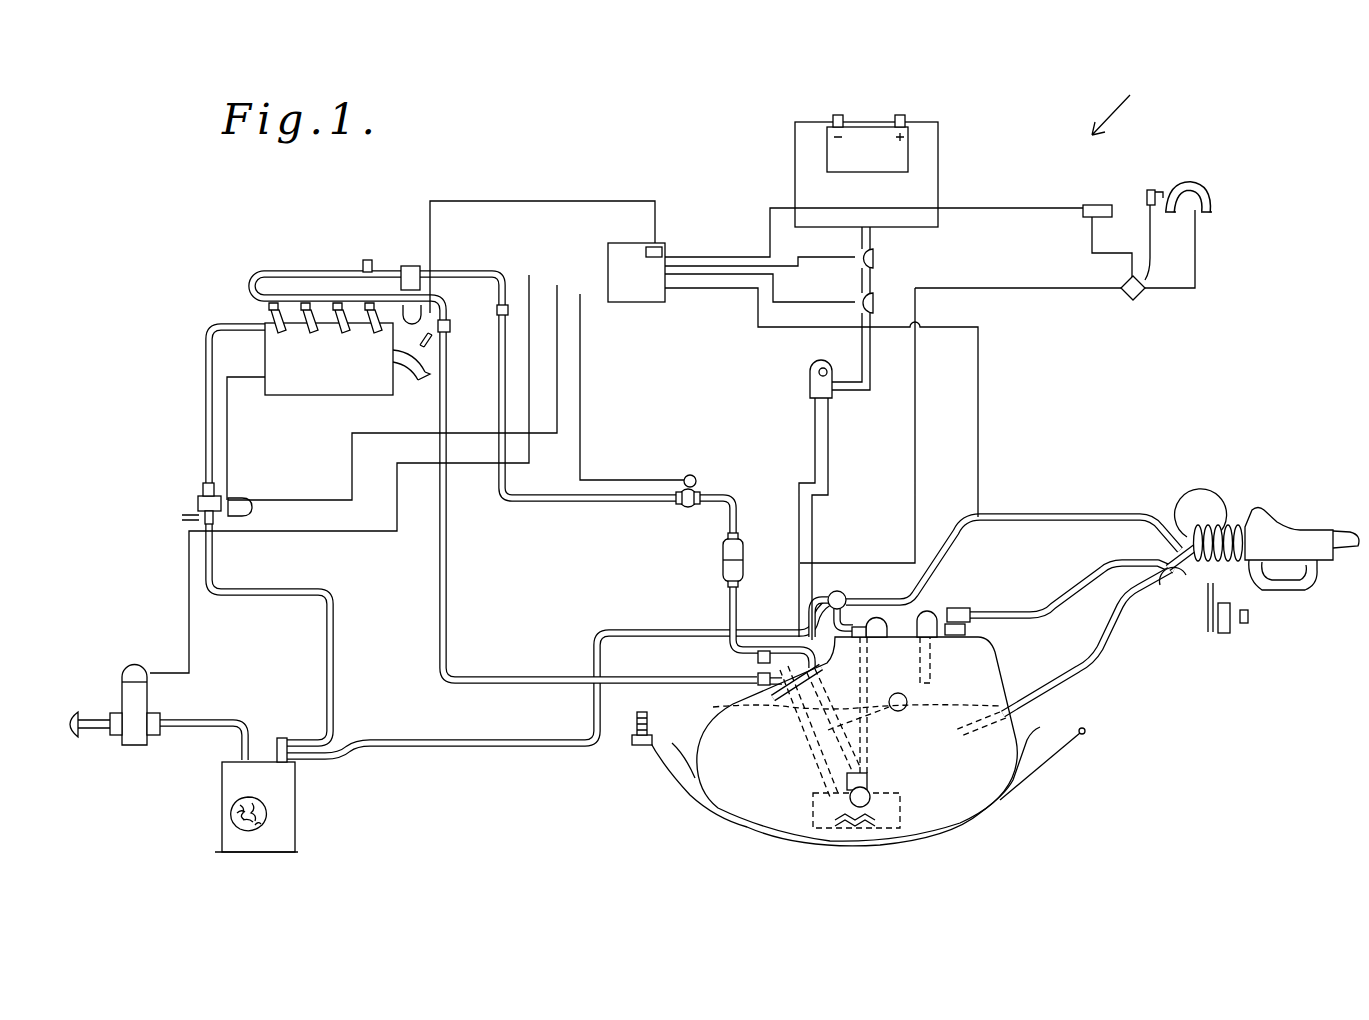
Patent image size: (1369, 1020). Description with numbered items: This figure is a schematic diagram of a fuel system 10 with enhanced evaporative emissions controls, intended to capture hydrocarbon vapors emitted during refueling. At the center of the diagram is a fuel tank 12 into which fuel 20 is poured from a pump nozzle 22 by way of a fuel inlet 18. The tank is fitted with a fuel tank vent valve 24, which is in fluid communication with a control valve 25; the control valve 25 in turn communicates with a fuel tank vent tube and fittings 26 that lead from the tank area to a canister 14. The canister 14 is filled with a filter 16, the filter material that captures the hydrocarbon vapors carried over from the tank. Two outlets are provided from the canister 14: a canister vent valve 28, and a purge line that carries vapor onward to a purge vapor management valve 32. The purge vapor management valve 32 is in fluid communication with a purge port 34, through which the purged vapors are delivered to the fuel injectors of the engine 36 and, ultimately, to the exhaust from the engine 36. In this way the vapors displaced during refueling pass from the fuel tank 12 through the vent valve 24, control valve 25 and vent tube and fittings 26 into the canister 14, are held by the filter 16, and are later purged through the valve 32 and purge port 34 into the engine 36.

The fuel system 10 is at (1117, 99).
The fuel tank 12 is at (772, 803).
The canister 14 is at (248, 795).
The filter 16 is at (268, 815).
The fuel inlet 18 is at (1130, 627).
The fuel 20 is at (957, 782).
The pump nozzle 22 is at (1292, 535).
The fuel tank vent valve 24 is at (880, 625).
The control valve 25 is at (837, 590).
The fuel tank vent tube and fittings 26 is at (505, 745).
The canister vent valve 28 is at (130, 690).
The purge vapor management valve 32 is at (199, 498).
The purge port 34 is at (243, 325).
The engine 36 is at (295, 370).